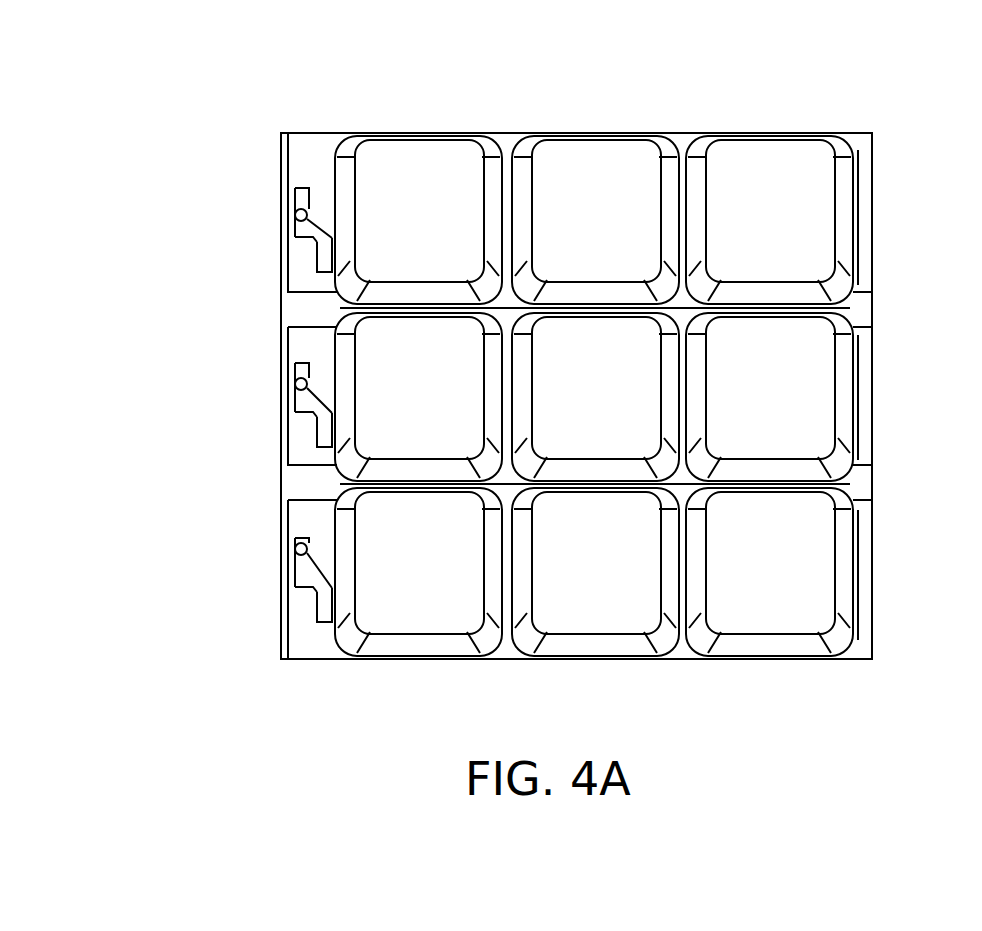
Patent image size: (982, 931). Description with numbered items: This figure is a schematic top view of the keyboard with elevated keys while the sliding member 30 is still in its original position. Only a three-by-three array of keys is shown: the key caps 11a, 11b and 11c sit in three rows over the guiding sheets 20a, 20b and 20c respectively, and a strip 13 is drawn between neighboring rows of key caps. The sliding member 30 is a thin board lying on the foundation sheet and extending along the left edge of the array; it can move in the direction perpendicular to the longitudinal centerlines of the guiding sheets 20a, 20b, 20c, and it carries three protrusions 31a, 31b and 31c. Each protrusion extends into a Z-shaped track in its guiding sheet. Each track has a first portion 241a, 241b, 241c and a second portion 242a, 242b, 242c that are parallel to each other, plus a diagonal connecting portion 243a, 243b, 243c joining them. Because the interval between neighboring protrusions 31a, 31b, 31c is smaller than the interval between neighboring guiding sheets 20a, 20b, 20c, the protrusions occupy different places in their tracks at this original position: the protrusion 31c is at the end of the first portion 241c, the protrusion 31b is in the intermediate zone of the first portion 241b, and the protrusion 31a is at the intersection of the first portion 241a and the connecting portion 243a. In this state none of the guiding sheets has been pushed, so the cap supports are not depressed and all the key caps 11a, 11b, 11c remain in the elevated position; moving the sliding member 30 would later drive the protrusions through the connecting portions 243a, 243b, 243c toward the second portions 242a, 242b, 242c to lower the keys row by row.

The sliding member 30 is at (285, 133).
The guiding sheet 20a is at (860, 151).
The guiding sheet 20b is at (860, 346).
The guiding sheet 20c is at (858, 521).
The key caps 11a is at (805, 217).
The key caps 11b is at (805, 411).
The key caps 11c is at (805, 586).
The gap strip 13 is at (858, 306).
The protrusion 31a is at (300, 217).
The protrusion 31b is at (300, 386).
The protrusion 31c is at (300, 548).
The first portion 241a is at (302, 197).
The first portion 241b is at (302, 373).
The first portion 241c is at (302, 567).
The second portion 242a is at (322, 264).
The second portion 242b is at (322, 438).
The second portion 242c is at (322, 614).
The connecting portion 243a is at (312, 235).
The connecting portion 243b is at (312, 410).
The connecting portion 243c is at (312, 586).